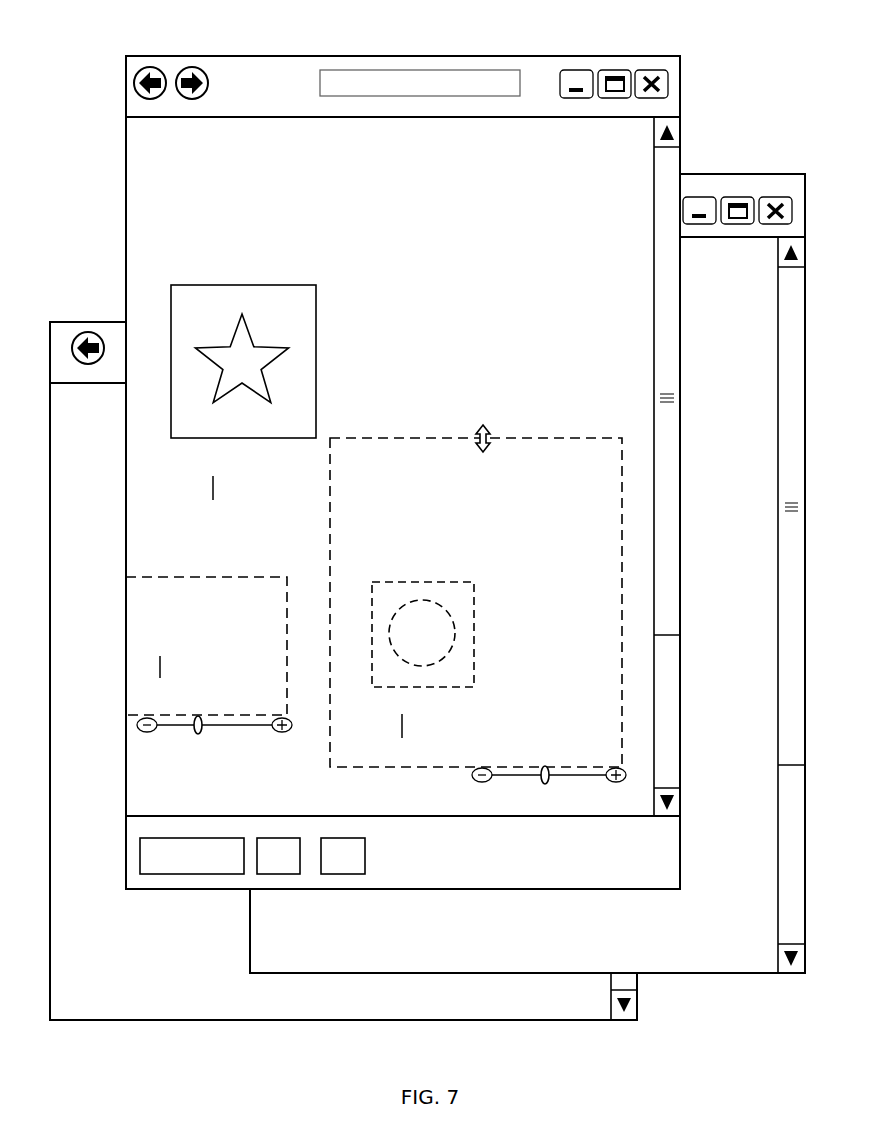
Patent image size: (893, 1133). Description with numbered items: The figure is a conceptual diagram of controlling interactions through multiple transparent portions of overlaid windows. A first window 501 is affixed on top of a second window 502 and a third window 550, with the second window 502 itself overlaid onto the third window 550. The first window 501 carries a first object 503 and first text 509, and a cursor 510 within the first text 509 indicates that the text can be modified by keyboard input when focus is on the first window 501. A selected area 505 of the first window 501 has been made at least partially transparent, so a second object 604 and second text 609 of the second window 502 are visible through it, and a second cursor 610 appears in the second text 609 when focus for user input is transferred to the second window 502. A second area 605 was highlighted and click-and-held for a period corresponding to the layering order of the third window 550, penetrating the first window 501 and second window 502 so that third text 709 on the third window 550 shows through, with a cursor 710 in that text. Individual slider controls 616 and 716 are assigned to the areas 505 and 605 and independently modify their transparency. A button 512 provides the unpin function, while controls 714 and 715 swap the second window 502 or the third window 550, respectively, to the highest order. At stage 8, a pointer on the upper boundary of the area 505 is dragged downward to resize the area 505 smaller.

The first window 501 is at (241, 53).
The second window 502 is at (744, 172).
The third window 550 is at (96, 320).
The first object 503 is at (184, 283).
The area 505 is at (386, 436).
The stage "8" 8 is at (479, 430).
The first text 509 is at (160, 490).
The cursor 510 is at (214, 500).
The second object 604 is at (400, 581).
The second text 609 is at (552, 714).
The second cursor 610 is at (402, 740).
The transparency control 616 is at (578, 785).
The second area 605 is at (150, 576).
The third text 709 is at (124, 667).
The text cursor in window 3 710 is at (162, 654).
The slider control 716 is at (252, 728).
The button 512 is at (168, 878).
The control 714 is at (283, 877).
The control 715 is at (346, 877).